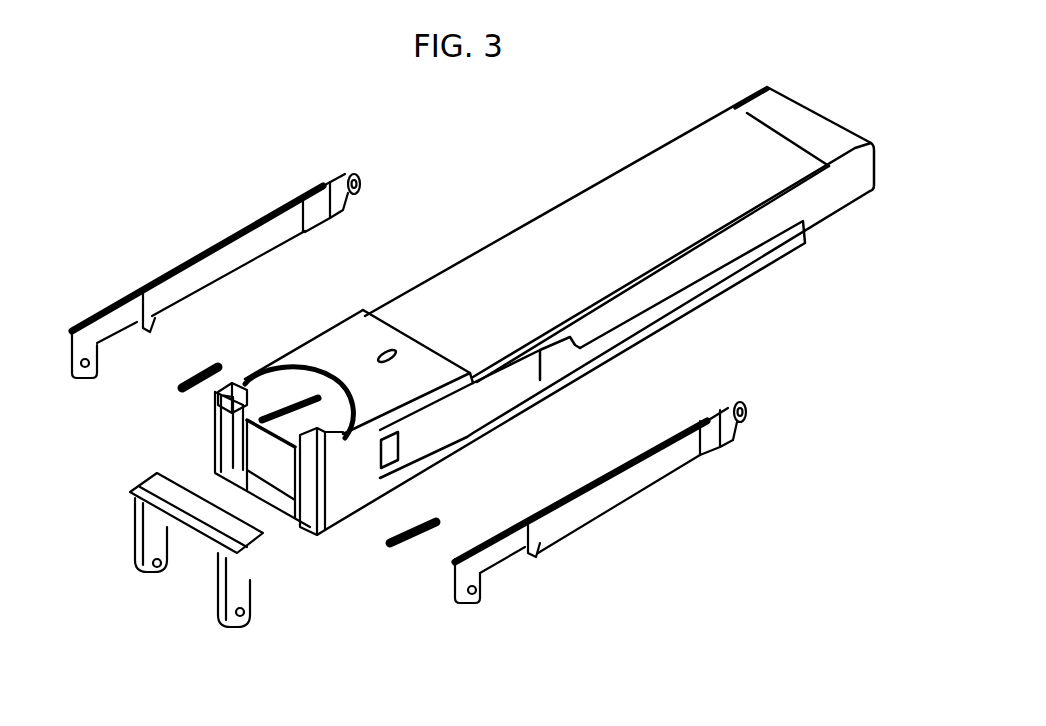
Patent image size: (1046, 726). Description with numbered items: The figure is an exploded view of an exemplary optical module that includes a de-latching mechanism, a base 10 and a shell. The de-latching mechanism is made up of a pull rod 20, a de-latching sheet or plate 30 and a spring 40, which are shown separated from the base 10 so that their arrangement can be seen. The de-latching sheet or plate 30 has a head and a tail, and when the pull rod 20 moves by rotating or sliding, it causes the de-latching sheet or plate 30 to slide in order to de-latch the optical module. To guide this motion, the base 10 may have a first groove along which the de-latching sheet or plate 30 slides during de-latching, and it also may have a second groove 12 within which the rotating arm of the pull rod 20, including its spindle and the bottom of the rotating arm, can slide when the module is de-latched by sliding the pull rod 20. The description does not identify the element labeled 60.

The base 10 is at (212, 442).
The second groove 12 is at (232, 400).
The pull rod 20 is at (200, 540).
The de-latching sheet or plate 30 is at (632, 485).
The spring 40 is at (405, 552).
The side block 60 is at (345, 465).